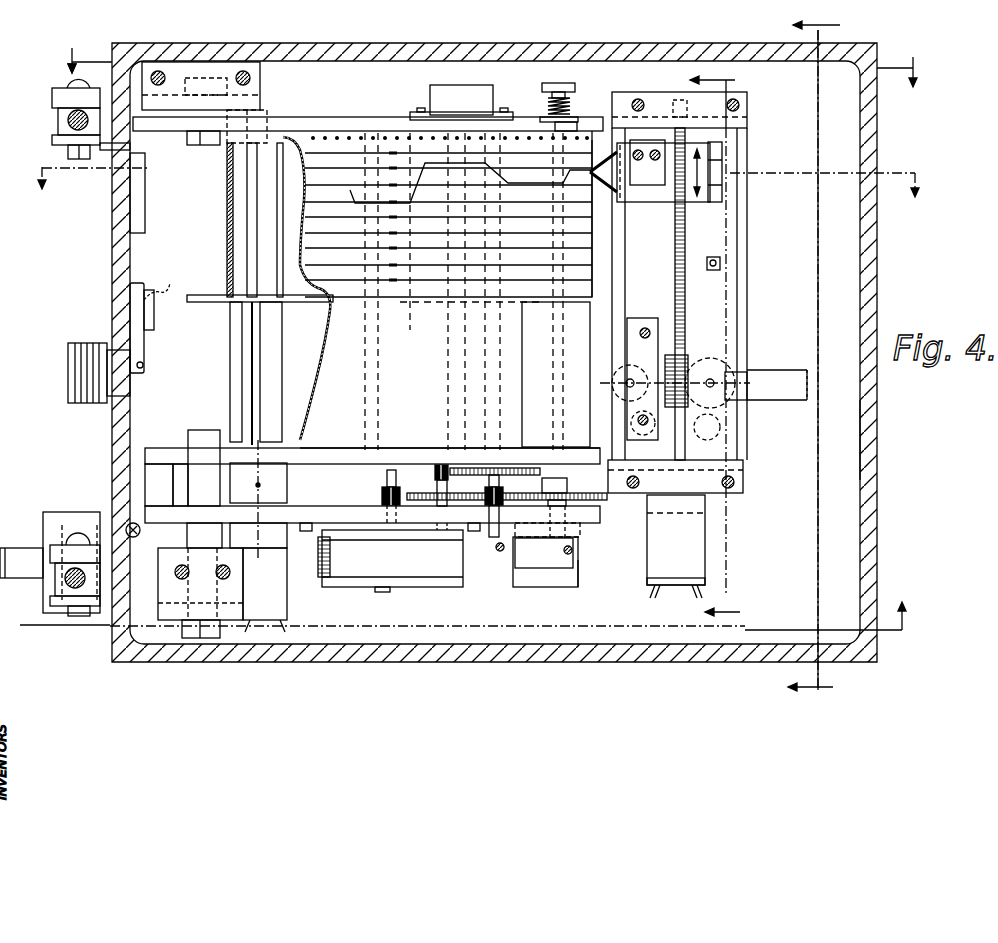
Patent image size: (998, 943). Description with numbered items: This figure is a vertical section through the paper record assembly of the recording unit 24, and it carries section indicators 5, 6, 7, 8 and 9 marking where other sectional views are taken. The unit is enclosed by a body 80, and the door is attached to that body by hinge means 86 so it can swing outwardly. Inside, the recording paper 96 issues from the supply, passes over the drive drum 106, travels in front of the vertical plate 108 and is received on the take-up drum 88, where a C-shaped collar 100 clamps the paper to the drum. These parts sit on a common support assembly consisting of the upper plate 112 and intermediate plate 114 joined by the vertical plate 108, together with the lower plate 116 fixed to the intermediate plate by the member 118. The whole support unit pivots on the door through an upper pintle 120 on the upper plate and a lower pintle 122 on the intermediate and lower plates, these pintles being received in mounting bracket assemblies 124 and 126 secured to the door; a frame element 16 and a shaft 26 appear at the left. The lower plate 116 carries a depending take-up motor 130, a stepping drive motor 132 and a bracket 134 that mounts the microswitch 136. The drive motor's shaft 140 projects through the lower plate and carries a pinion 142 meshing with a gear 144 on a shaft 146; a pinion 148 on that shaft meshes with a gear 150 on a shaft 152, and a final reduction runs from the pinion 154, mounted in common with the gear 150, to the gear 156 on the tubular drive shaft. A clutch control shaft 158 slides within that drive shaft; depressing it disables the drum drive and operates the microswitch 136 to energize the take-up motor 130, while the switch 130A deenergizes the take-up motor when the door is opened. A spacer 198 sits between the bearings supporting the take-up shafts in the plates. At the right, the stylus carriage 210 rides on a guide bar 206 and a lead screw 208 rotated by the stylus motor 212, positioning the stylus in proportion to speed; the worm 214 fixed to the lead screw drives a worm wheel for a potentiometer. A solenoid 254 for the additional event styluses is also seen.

The section line 5- 5 is at (489, 67).
The section line 6- 6 is at (479, 177).
The section line 7- 7 is at (463, 621).
The section line 8- 8 is at (804, 357).
The section line 9- 9 is at (706, 348).
The frame plate 16 is at (250, 581).
The unit 24 is at (887, 268).
The shaft 26 is at (22, 548).
The body 80 is at (878, 440).
The hinge means 86 is at (66, 150).
The take-up drum 88 is at (75, 545).
The recording paper 96 is at (420, 277).
The C-shaped collar 100 is at (227, 246).
The drive drum 106 is at (585, 317).
The vertical plate 108 is at (326, 312).
The upper plate 112 is at (330, 117).
The intermediate plate 114 is at (322, 456).
The lower plate 116 is at (315, 506).
The member 118 is at (160, 450).
The upper pintle 120 is at (208, 148).
The lower pintle 122 is at (203, 448).
The mounting bracket assembly 124 is at (262, 92).
The mounting bracket assembly 126 is at (165, 573).
The take-up motor 130 is at (287, 603).
The switch 130A is at (130, 320).
The drive motor 132 is at (368, 570).
The bracket 134 is at (527, 575).
The microswitch 136 is at (573, 575).
The drive shaft 140 is at (392, 470).
The pinion 142 is at (382, 493).
The gear 144 is at (438, 465).
The shaft 146 is at (443, 506).
The pinion 148 is at (490, 487).
The gear 150 is at (553, 478).
The shaft 152 is at (547, 544).
The pinion 154 is at (493, 552).
The gear 156 is at (610, 500).
The clutch control shaft 158 is at (560, 503).
The spacer 198 is at (262, 486).
The guide bar 206 is at (625, 256).
The lead screw 208 is at (688, 245).
The stylus carriage 210 is at (653, 198).
The stylus motor 212 is at (700, 540).
The worm 214 is at (690, 355).
The solenoid 254 is at (783, 370).